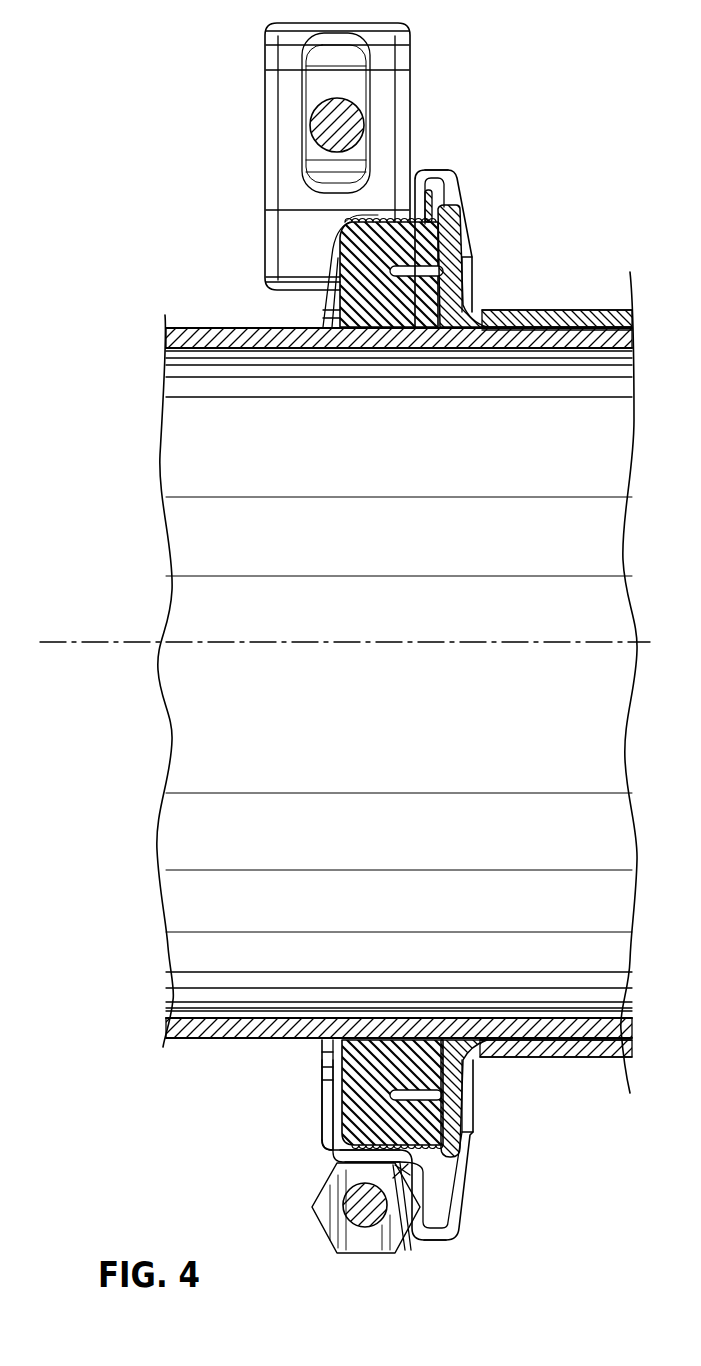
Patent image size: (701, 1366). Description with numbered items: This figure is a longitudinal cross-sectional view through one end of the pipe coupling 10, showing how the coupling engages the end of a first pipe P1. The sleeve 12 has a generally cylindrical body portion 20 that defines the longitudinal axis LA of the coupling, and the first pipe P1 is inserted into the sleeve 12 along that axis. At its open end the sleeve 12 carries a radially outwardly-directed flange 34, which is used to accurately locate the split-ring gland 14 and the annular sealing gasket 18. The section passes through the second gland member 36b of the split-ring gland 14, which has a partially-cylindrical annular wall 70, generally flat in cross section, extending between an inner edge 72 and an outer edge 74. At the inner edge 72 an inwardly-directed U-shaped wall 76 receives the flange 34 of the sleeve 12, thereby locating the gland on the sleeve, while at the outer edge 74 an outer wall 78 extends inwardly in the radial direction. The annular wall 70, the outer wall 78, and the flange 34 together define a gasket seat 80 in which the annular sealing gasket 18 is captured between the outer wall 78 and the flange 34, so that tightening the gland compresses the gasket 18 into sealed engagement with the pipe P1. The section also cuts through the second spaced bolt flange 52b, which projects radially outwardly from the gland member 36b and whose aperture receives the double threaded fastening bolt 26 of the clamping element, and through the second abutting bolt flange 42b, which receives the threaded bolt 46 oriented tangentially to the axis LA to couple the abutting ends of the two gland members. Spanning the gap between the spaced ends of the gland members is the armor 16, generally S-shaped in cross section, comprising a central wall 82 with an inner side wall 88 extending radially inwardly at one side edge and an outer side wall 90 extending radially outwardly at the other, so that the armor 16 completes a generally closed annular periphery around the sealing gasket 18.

The pipe coupling 10 is at (104, 241).
The sleeve 12 is at (551, 307).
The split-ring gland 14 is at (264, 31).
The armor 16 is at (338, 222).
The annular sealing gasket 18 is at (342, 320).
The generally cylindrical body portion 20 is at (591, 310).
The double threaded fastening bolt 26 is at (318, 103).
The radially outwardly-directed flange 34 is at (452, 276).
The second gland member 36b is at (458, 176).
The second abutting bolt flange 42b is at (326, 1232).
The threaded bolt 46 is at (340, 1197).
The second spaced bolt flange 52b is at (411, 28).
The partially-cylindrical annular wall 70 is at (338, 1165).
The inner edge 72 is at (400, 1242).
The outer edge 74 is at (338, 1162).
The U-shaped wall 76 is at (437, 174).
The outer wall 78 is at (332, 1113).
The gasket seat 80 is at (335, 1085).
The central wall 82 is at (377, 220).
The inner side wall 88 is at (432, 201).
The outer side wall 90 is at (335, 252).
The longitudinal axis LA is at (48, 641).
The first pipe P1 is at (197, 1040).